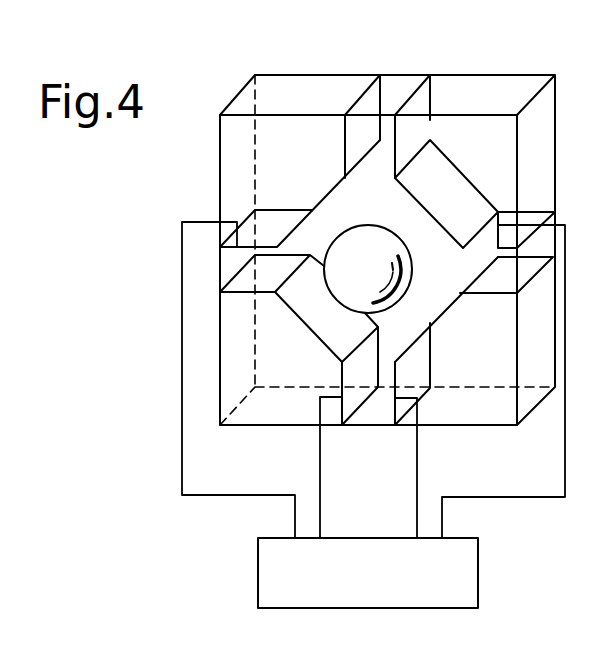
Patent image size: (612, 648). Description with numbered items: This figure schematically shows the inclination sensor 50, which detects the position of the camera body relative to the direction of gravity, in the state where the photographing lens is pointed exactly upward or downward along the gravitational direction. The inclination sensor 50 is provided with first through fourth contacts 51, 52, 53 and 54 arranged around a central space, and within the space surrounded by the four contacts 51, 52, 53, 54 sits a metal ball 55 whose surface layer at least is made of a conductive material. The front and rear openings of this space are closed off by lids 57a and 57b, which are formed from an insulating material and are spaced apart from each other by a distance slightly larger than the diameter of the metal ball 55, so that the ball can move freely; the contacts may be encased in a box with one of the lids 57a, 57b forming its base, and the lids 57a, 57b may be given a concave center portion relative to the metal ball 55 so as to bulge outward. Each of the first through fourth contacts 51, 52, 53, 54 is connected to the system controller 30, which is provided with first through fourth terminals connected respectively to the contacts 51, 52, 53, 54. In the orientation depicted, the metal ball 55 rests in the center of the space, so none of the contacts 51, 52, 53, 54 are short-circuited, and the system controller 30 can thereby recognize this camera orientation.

The inclination sensor 50 is at (481, 71).
The first contact 51 is at (332, 189).
The second contact 52 is at (445, 225).
The third contact 53 is at (292, 311).
The fourth contact 54 is at (437, 321).
The metal ball 55 is at (355, 245).
The lid 57a is at (268, 120).
The lid 57b is at (330, 72).
The system controller 30 is at (478, 572).